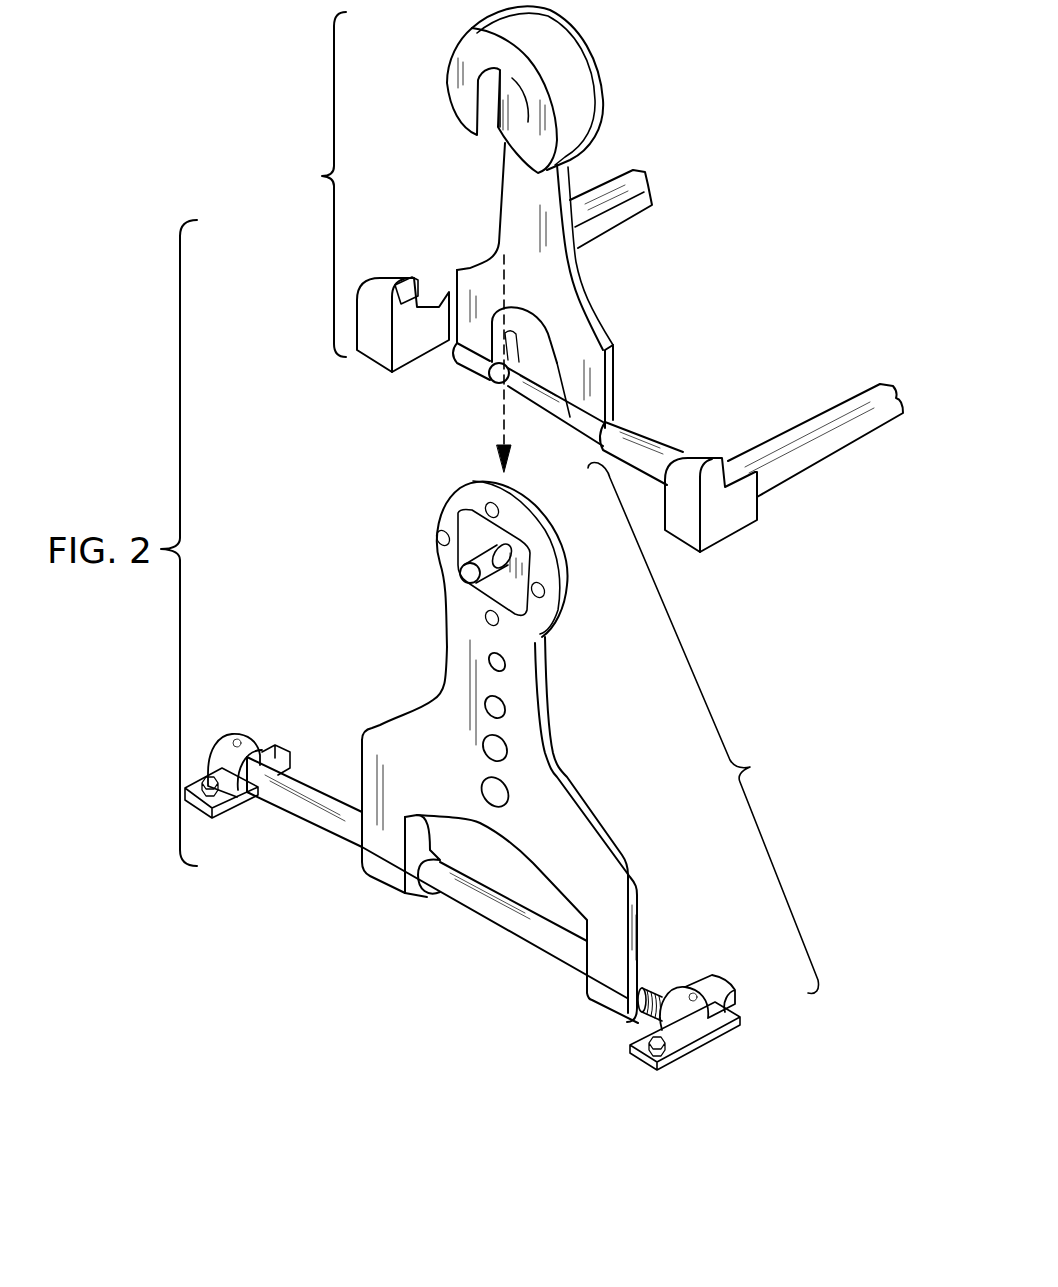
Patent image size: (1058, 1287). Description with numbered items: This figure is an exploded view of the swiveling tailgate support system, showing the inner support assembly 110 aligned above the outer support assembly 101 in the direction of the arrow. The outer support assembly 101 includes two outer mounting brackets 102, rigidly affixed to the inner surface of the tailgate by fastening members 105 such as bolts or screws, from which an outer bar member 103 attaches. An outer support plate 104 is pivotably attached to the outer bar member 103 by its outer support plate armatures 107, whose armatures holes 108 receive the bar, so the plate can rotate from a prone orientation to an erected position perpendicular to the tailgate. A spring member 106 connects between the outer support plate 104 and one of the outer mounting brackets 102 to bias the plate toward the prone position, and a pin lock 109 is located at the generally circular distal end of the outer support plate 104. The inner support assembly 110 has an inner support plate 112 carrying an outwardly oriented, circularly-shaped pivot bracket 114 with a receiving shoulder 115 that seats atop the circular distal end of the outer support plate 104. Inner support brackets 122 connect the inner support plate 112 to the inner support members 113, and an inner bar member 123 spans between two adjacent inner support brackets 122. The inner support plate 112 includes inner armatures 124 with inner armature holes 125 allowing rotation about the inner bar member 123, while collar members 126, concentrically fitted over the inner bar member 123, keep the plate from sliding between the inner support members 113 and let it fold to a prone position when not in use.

The outer support assembly 101 is at (590, 743).
The outer mounting brackets 102 is at (697, 1030).
The outer bar member 103 is at (475, 913).
The outer support plate 104 is at (377, 737).
The fastening members 105 is at (647, 1042).
The spring member 106 is at (663, 993).
The outer support plate armatures 107 is at (377, 868).
The armatures holes 108 is at (437, 893).
The pin lock 109 is at (470, 561).
The inner support assembly 110 is at (300, 184).
The inner support plates 112 is at (577, 290).
The inner support members 113 is at (830, 420).
The pivot bracket 114 is at (563, 83).
The receiving shoulder 115 is at (517, 90).
The inner support brackets 122 is at (730, 513).
The inner bar member 123 is at (540, 383).
The inner armatures 124 is at (597, 380).
The inner armature holes 125 is at (502, 375).
The collar members 126 is at (650, 443).